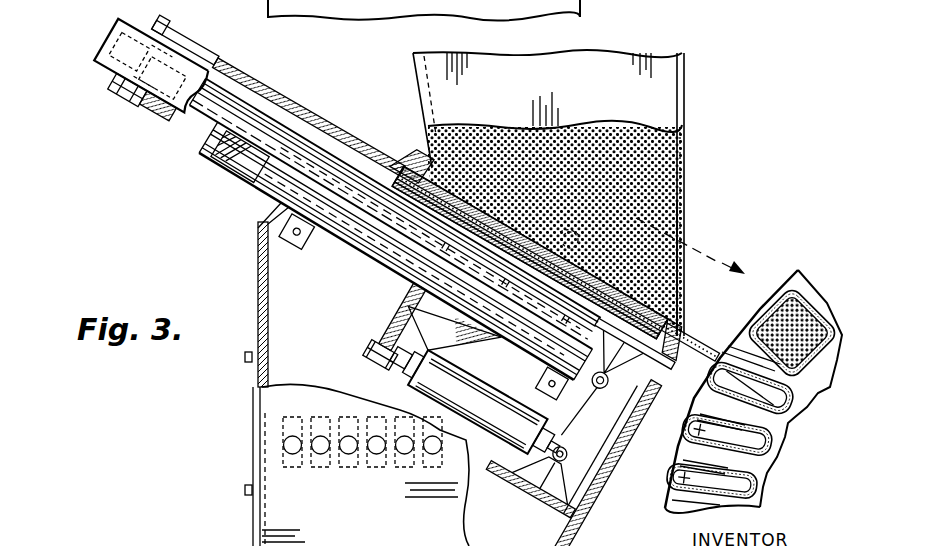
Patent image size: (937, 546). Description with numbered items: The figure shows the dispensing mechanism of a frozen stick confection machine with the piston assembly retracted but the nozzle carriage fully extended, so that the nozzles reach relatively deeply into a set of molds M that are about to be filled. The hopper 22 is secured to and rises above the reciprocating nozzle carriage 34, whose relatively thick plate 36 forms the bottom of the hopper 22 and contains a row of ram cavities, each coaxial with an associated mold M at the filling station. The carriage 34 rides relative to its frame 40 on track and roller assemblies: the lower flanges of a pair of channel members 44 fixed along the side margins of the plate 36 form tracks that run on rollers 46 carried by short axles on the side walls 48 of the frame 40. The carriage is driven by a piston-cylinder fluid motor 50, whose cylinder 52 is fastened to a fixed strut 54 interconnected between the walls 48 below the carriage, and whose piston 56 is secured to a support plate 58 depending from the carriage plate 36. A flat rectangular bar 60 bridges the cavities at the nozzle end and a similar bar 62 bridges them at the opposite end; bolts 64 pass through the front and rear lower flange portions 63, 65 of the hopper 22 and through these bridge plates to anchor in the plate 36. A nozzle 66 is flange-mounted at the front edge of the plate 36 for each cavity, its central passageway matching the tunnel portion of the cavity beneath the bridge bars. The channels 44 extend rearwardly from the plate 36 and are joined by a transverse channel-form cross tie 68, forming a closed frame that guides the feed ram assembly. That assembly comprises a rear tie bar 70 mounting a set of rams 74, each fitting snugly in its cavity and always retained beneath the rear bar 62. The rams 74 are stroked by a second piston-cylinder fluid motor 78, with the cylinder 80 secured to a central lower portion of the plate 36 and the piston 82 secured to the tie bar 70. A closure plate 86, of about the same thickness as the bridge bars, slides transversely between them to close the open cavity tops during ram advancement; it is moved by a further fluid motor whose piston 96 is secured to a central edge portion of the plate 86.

The hopper 22 is at (548, 87).
The nozzle carriage 34 is at (686, 310).
The plate 36 is at (374, 178).
The frame 40 is at (258, 273).
The channel members 44 is at (236, 176).
The rollers 46 is at (322, 244).
The side walls 48 is at (257, 400).
The fluid motor 50 is at (470, 373).
The cylinder 52 is at (526, 428).
The strut 54 is at (530, 496).
The piston 56 is at (396, 378).
The support plate 58 is at (388, 318).
The bar 60 is at (666, 312).
The bar 62 is at (398, 157).
The front lower flange portion 63 is at (690, 325).
The bolts 64 is at (412, 153).
The rear lower flange portion 65 is at (408, 160).
The nozzle 66 is at (690, 358).
The cross tie 68 is at (102, 28).
The tie bar 70 is at (148, 26).
The rams 74 is at (263, 82).
The fluid motor 78 is at (190, 162).
The cylinder 80 is at (354, 250).
The piston 82 is at (158, 118).
The closure plate 86 is at (472, 206).
The piston 96 is at (563, 232).
The molds M is at (828, 382).